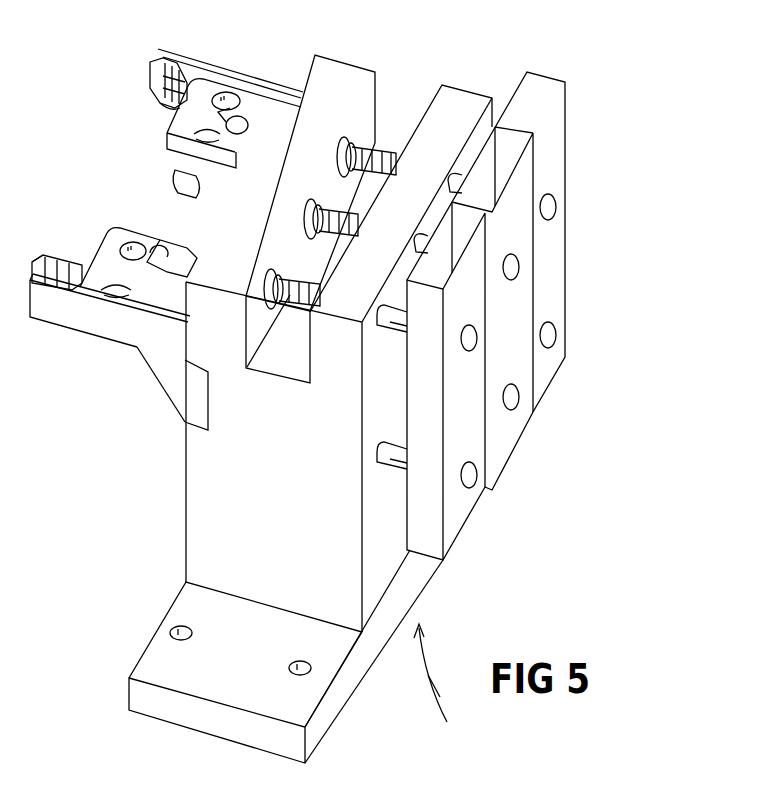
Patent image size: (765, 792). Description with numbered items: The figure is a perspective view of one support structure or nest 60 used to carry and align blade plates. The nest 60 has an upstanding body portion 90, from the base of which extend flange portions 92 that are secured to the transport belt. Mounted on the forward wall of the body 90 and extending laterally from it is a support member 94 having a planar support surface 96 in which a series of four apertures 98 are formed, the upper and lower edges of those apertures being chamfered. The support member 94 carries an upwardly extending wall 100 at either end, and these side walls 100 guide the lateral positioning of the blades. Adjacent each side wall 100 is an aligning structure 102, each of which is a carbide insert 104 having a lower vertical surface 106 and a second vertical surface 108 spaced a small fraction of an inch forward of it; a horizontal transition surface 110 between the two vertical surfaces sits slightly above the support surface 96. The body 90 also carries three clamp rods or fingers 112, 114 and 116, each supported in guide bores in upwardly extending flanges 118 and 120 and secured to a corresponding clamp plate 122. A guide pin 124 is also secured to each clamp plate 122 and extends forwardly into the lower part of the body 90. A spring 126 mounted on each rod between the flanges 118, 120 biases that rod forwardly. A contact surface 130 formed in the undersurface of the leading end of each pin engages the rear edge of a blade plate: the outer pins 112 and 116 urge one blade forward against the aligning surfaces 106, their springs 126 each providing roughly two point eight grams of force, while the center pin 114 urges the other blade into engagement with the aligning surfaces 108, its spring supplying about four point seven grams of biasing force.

The support structure or nest 60 is at (438, 685).
The body portion 90 is at (198, 497).
The flange portions 92 is at (157, 652).
The support member 94 is at (172, 383).
The planar support surface 96 is at (98, 267).
The apertures 98 is at (135, 247).
The upwardly extending wall 100 is at (80, 297).
The aligning structure 102 is at (146, 65).
The carbide insert 104 is at (62, 262).
The lower vertical surface 106 is at (177, 110).
The second vertical surface 108 is at (167, 85).
The horizontal transition surface 110 is at (168, 93).
The clamp rod or finger 112 is at (160, 252).
The center clamp rod or finger 114 is at (186, 183).
The clamp rod or finger 116 is at (241, 123).
The upwardly extending flange 118 is at (345, 68).
The upwardly extending flange 120 is at (463, 97).
The clamp plate 122 is at (547, 380).
The guide pin 124 is at (385, 463).
The spring 126 is at (292, 297).
The contact surface 130 is at (172, 244).